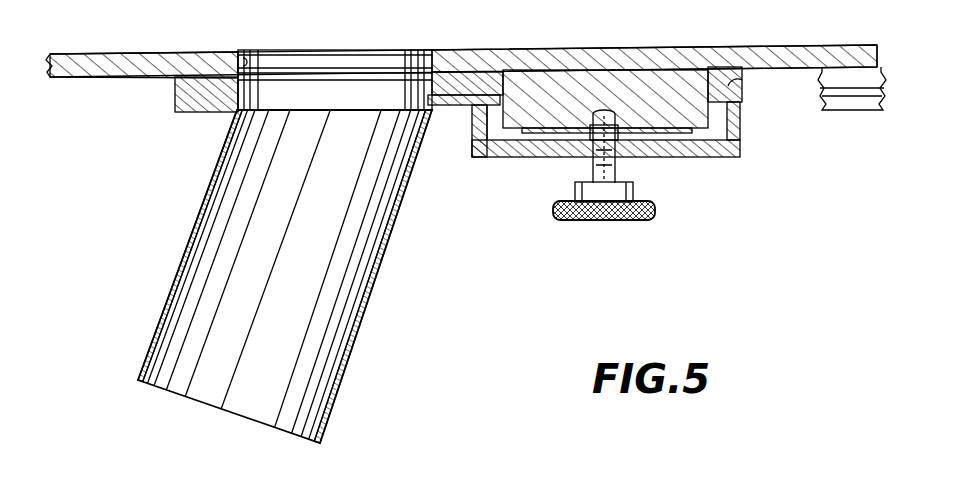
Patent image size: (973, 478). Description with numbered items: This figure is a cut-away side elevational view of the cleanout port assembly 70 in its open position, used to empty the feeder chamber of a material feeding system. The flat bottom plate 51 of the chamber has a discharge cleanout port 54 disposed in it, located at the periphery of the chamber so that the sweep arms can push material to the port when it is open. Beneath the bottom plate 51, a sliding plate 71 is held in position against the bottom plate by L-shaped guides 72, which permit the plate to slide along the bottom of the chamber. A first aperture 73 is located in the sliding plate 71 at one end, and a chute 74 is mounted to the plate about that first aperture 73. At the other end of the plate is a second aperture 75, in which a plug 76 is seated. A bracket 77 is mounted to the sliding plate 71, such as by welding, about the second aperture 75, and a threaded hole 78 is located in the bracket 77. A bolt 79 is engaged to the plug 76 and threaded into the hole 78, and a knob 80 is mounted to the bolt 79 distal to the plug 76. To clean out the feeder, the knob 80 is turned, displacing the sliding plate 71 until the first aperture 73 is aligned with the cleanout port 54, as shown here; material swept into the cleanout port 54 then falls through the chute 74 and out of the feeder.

The bottom plate 51 is at (878, 52).
The discharge cleanout port 54 is at (237, 78).
The cleanout port assembly 70 is at (105, 212).
The sliding plate 71 is at (190, 100).
The guides 72 is at (878, 98).
The first aperture 73 is at (287, 98).
The chute 74 is at (368, 282).
The second aperture 75 is at (497, 110).
The plug 76 is at (728, 84).
The bracket 77 is at (738, 158).
The threaded hole 78 is at (615, 150).
The bolt 79 is at (593, 160).
The knob 80 is at (553, 208).